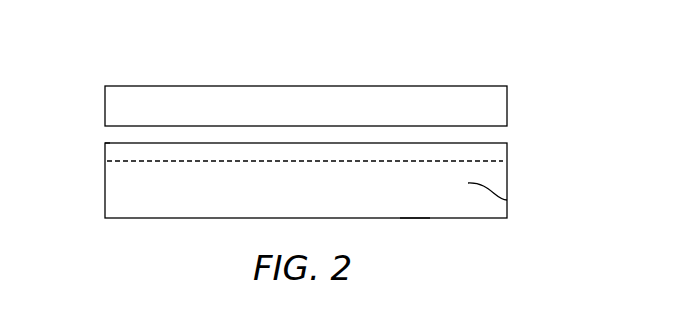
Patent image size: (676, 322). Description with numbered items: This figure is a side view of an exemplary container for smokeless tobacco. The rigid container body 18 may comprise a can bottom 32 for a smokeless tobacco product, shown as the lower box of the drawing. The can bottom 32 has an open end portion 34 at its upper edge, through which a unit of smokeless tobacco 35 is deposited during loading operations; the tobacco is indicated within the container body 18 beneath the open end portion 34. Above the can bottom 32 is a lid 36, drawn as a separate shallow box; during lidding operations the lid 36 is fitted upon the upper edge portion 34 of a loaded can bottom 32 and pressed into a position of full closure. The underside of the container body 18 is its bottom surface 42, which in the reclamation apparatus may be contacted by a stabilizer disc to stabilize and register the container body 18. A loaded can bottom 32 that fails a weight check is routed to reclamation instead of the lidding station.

The rigid container body 18 is at (507, 182).
The can bottom 32 is at (105, 161).
The open end portion 34 is at (114, 143).
The unit of smokeless tobacco 35 is at (468, 183).
The lid 36 is at (418, 96).
The bottom surface 42 is at (415, 219).